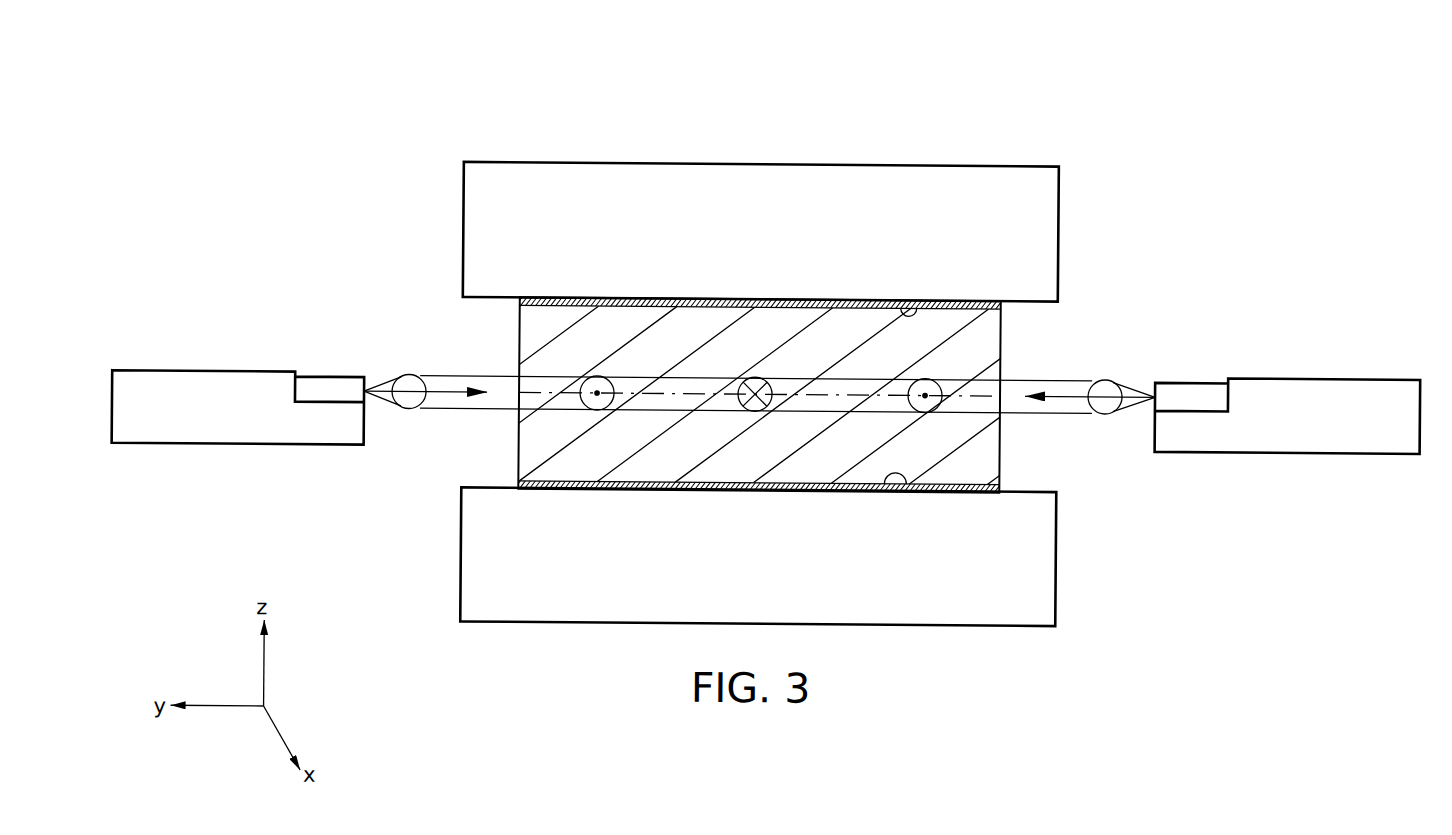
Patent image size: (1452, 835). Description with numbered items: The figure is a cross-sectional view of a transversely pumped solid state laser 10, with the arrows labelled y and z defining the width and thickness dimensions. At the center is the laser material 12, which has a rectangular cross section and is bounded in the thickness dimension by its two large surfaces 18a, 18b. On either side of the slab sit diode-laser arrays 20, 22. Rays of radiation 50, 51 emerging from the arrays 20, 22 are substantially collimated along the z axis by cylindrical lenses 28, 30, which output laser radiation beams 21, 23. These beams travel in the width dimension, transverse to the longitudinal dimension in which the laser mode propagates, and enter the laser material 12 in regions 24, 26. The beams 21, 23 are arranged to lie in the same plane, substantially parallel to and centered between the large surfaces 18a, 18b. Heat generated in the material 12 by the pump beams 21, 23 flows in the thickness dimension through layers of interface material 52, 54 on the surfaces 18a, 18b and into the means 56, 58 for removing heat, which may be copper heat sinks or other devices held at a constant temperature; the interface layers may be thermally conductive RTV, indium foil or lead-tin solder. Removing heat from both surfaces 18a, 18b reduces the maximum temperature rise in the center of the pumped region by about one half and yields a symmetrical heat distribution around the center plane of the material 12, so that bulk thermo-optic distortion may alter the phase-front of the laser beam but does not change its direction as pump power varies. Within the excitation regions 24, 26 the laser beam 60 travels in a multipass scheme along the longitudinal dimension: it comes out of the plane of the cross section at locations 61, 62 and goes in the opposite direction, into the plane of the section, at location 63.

The transversely pumped solid state laser 10 is at (458, 88).
The laser material 12 is at (754, 400).
The thickness end surface 18a is at (916, 307).
The thickness end surface 18b is at (898, 482).
The diode-laser array 20 is at (232, 424).
The laser radiation beam 21 is at (480, 374).
The diode-laser array 22 is at (1335, 419).
The laser radiation beam 23 is at (1087, 414).
The excitation region 24 is at (753, 395).
The excitation region 26 is at (727, 378).
The cylindrical lens 28 is at (404, 377).
The cylindrical lens 30 is at (1107, 377).
The rays of radiation 50 is at (378, 382).
The rays of radiation 51 is at (1130, 384).
The layer of interface material 52 is at (1003, 303).
The layer of interface material 54 is at (519, 481).
The means for removing heat 56 is at (768, 236).
The means for removing heat 58 is at (775, 568).
The laser beam 60 is at (877, 369).
The location 61 is at (925, 411).
The location 62 is at (587, 408).
The location 63 is at (752, 410).